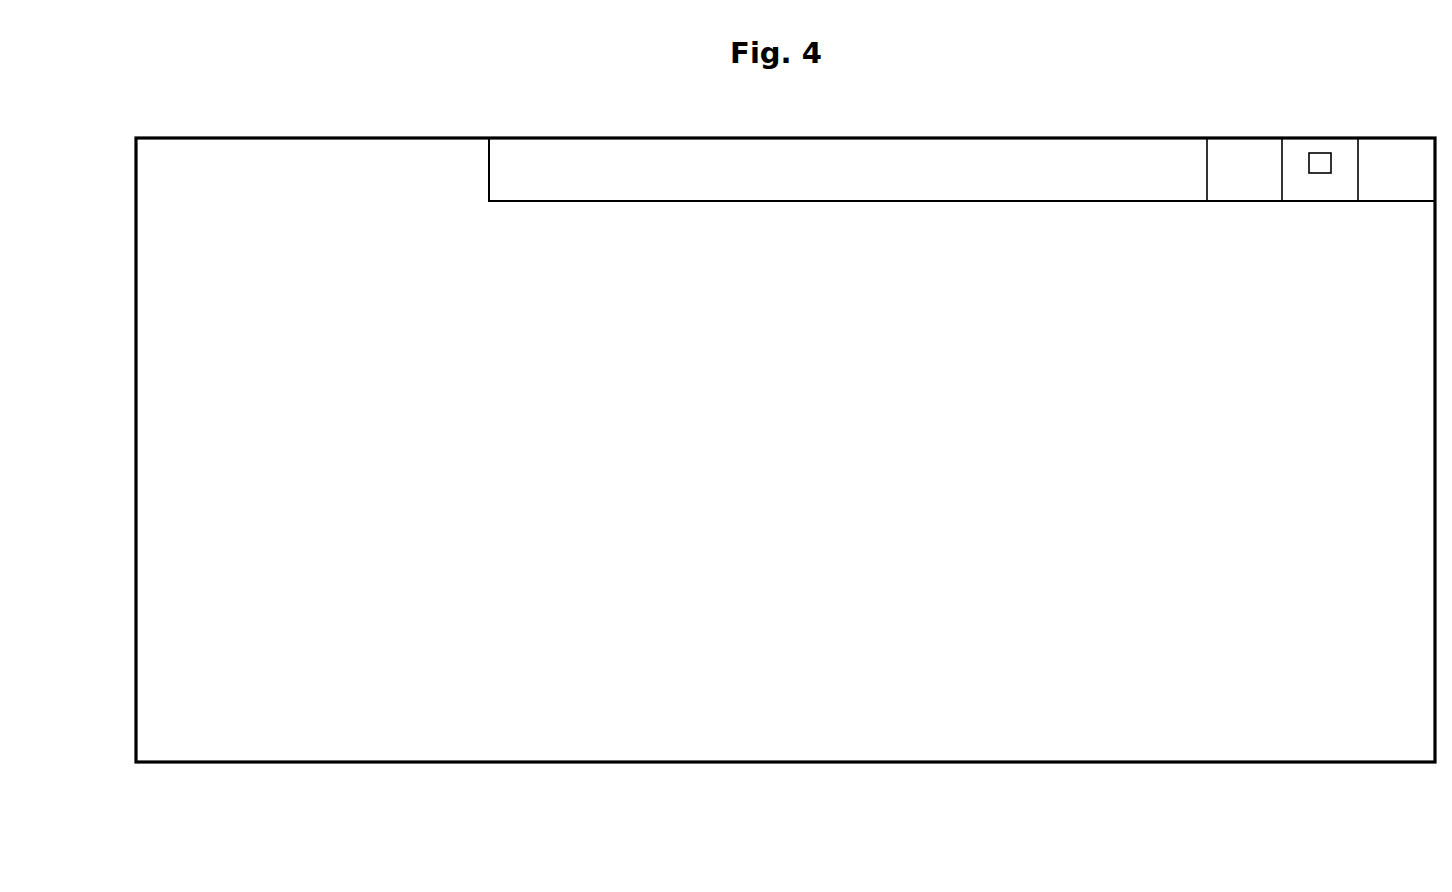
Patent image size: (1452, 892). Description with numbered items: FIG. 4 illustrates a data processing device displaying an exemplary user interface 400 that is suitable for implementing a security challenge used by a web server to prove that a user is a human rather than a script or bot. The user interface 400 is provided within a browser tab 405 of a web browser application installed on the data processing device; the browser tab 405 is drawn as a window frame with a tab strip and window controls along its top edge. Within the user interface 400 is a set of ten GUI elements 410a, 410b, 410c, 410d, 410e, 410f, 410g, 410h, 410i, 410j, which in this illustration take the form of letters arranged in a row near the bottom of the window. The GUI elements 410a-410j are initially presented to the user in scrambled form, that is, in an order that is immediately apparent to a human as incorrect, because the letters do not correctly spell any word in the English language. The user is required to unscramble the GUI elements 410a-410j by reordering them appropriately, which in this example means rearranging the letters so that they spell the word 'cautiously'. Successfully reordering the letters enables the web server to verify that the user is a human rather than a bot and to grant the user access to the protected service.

The user interface 400 is at (226, 104).
The browser tab 405 is at (160, 257).
The GUI element 410a is at (388, 727).
The GUI element 410b is at (492, 727).
The GUI element 410c is at (571, 727).
The GUI element 410d is at (647, 727).
The GUI element 410e is at (738, 727).
The GUI element 410f is at (837, 727).
The GUI element 410g is at (932, 727).
The GUI element 410h is at (1014, 727).
The GUI element 410i is at (1093, 727).
The GUI element 410j is at (1179, 727).